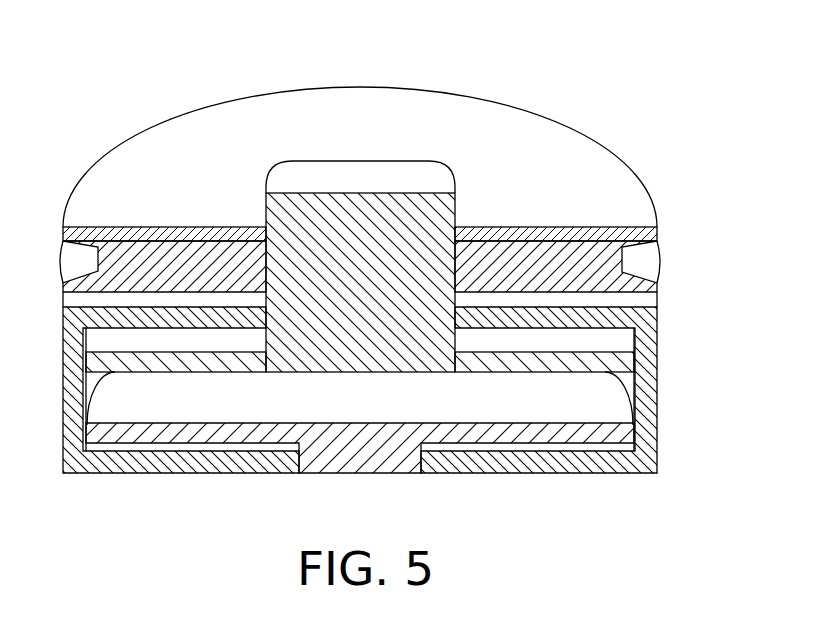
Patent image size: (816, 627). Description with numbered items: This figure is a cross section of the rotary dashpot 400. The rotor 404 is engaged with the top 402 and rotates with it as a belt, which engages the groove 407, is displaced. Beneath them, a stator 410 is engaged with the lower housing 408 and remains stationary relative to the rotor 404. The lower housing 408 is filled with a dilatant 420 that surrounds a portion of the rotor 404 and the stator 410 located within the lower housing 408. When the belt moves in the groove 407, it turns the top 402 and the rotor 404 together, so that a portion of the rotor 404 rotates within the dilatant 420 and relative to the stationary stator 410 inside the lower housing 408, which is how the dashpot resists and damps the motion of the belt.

The rotary dashpot 400 is at (622, 97).
The top 402 is at (455, 125).
The rotor 404 is at (325, 183).
The groove 407 is at (641, 262).
The lower housing 408 is at (658, 358).
The stator 410 is at (378, 474).
The dilatant 420 is at (640, 395).